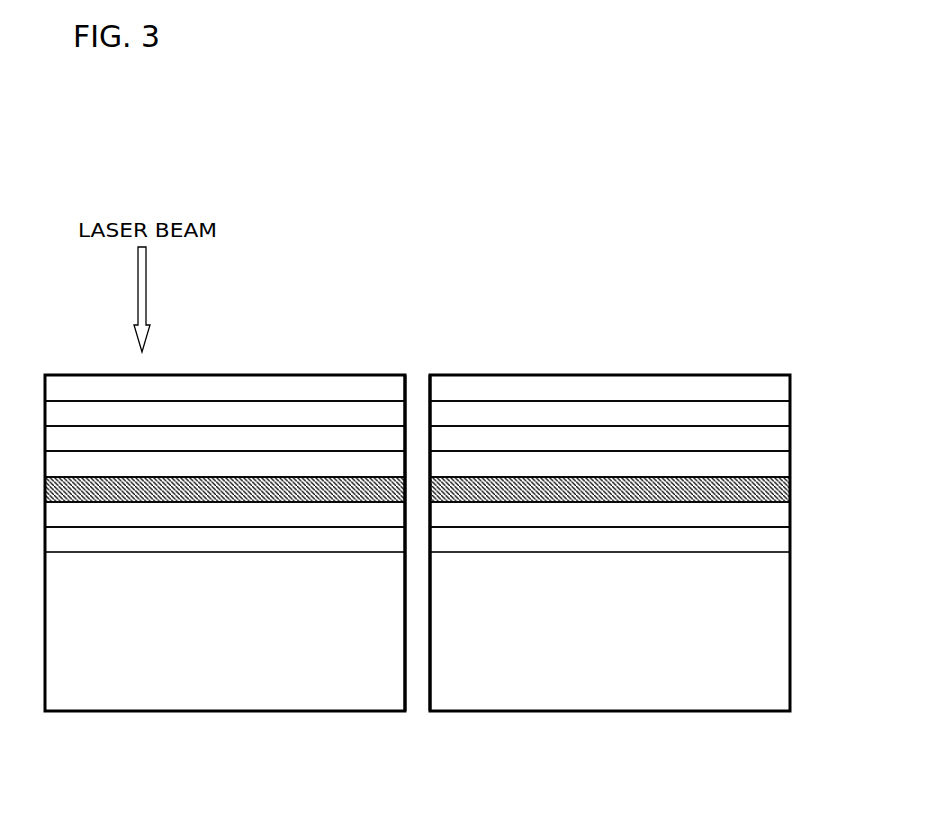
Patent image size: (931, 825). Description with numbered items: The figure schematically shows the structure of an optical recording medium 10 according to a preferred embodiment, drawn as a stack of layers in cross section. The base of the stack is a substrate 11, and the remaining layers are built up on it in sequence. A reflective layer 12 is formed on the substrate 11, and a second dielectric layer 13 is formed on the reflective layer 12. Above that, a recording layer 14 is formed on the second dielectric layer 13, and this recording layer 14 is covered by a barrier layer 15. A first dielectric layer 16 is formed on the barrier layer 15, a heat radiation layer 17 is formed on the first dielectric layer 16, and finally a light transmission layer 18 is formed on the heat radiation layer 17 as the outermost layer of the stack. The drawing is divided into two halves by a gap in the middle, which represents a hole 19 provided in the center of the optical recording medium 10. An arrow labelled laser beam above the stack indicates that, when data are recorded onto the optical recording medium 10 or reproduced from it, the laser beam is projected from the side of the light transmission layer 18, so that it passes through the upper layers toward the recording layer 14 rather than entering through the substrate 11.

The optical recording medium 10 is at (623, 235).
The substrate 11 is at (791, 626).
The reflective layer 12 is at (791, 538).
The second dielectric layer 13 is at (791, 512).
The recording layer 14 is at (791, 488).
The barrier layer 15 is at (791, 461).
The first dielectric layer 16 is at (791, 435).
The heat radiation layer 17 is at (791, 410).
The light transmission layer 18 is at (791, 386).
The hole 19 is at (418, 722).